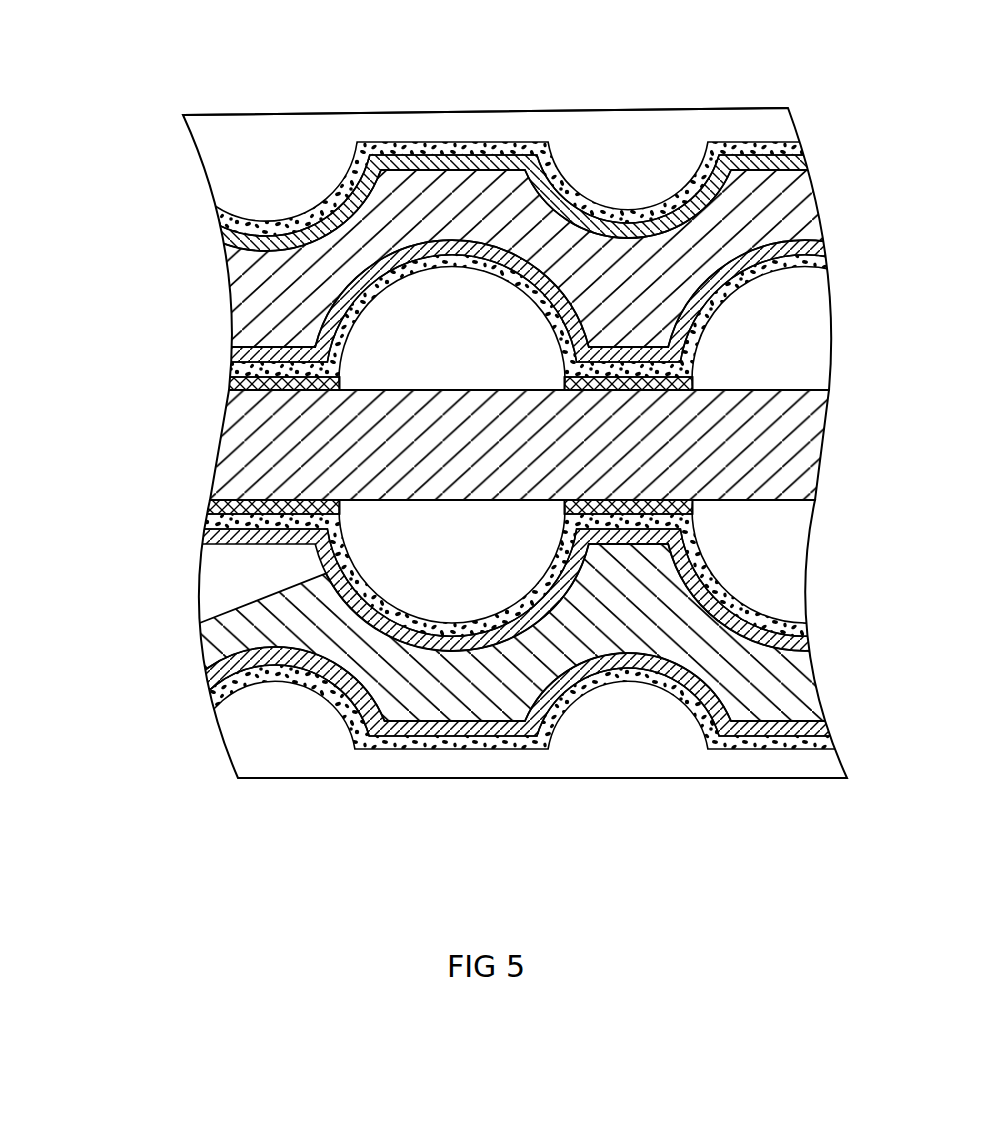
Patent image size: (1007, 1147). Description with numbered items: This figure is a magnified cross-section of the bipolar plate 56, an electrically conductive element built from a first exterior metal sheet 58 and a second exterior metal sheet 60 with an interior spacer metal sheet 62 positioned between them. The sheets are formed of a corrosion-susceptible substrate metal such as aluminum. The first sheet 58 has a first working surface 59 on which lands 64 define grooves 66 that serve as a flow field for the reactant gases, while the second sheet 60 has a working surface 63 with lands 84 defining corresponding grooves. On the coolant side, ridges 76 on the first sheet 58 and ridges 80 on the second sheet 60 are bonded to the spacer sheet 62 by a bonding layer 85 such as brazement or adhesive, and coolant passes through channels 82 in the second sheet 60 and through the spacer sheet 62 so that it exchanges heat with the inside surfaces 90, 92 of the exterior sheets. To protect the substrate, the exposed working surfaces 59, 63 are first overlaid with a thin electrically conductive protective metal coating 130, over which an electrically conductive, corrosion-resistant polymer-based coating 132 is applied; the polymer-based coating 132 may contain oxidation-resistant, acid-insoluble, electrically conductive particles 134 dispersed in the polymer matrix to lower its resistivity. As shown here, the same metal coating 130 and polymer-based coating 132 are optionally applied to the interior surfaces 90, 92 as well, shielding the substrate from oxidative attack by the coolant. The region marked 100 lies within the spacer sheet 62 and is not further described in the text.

The bipolar plate 56 is at (158, 108).
The first exterior metal sheet 58 is at (800, 200).
The first working surface 59 is at (447, 118).
The second exterior metal sheet 60 is at (793, 677).
The interior spacer metal sheet 62 is at (773, 441).
The working surface 63 is at (428, 772).
The lands 64 is at (482, 185).
The grooves 66 is at (627, 180).
The ridges 76 is at (672, 372).
The ridges 80 is at (673, 517).
The channels 82 is at (357, 540).
The lands 84 is at (405, 692).
The bonding layer 85 is at (563, 378).
The inside surface of first sheet 90 is at (656, 486).
The inside surface of second sheet 92 is at (656, 401).
The core layer interior 100 is at (628, 432).
The electrically conductive protective metal coating 130 is at (225, 236).
The corrosion-resistant protective polymer-based coating 132 is at (228, 374).
The electrically conductive particles 134 is at (384, 148).